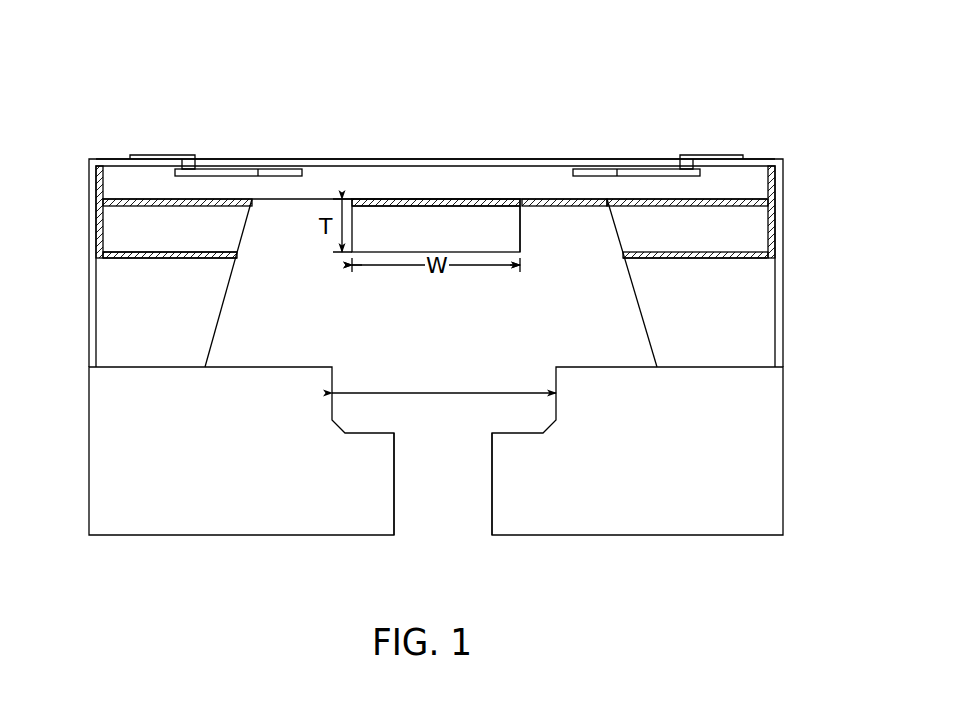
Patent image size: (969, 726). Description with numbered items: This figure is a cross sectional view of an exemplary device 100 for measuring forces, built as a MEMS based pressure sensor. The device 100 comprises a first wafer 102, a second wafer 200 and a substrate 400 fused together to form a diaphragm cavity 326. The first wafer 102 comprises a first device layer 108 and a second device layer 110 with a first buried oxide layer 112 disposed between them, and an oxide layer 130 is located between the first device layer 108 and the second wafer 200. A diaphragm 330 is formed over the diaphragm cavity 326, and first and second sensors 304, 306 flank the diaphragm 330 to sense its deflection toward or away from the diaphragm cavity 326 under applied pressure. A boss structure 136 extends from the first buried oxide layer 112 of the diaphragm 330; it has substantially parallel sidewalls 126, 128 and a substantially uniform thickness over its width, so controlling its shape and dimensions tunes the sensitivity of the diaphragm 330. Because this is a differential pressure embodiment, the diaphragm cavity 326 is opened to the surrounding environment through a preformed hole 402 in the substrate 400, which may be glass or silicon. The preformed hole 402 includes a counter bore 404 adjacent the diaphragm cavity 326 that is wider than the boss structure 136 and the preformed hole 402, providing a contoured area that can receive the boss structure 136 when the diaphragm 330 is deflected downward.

The device 100 is at (516, 66).
The first wafer 102 is at (795, 160).
The first device layer 108 is at (750, 238).
The second device layer 110 is at (750, 186).
The first buried oxide layer 112 is at (606, 200).
The sidewall 126 is at (357, 217).
The sidewall 128 is at (513, 233).
The oxide layer 130 is at (163, 258).
The boss structure 136 is at (456, 239).
The second wafer 200 is at (757, 328).
The first sensor 304 is at (210, 158).
The second sensor 306 is at (655, 158).
The diaphragm cavity 326 is at (452, 323).
The diaphragm 330 is at (445, 158).
The substrate 400 is at (755, 444).
The preformed hole 402 is at (465, 451).
The counter bore 404 is at (432, 393).